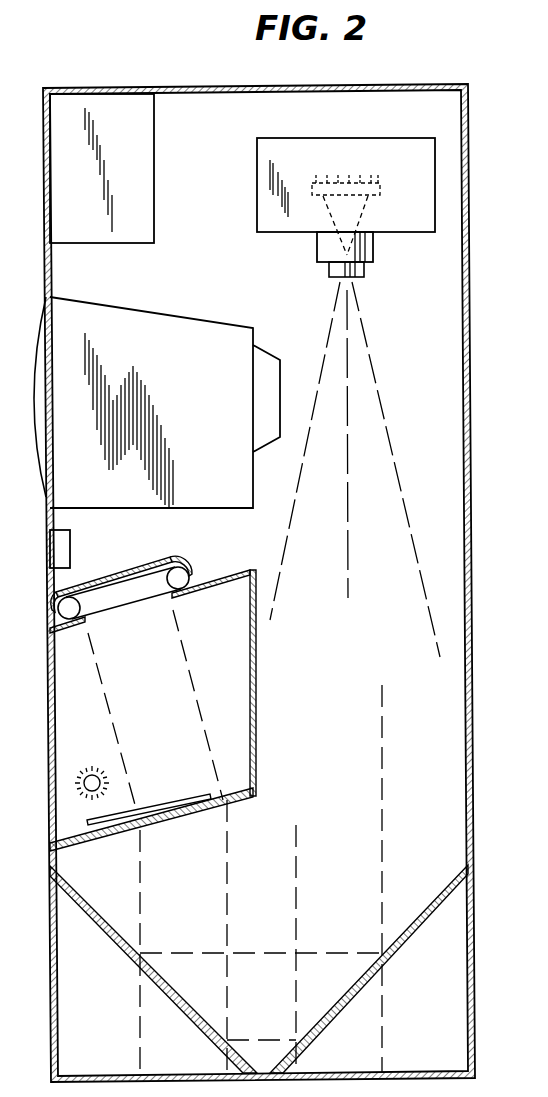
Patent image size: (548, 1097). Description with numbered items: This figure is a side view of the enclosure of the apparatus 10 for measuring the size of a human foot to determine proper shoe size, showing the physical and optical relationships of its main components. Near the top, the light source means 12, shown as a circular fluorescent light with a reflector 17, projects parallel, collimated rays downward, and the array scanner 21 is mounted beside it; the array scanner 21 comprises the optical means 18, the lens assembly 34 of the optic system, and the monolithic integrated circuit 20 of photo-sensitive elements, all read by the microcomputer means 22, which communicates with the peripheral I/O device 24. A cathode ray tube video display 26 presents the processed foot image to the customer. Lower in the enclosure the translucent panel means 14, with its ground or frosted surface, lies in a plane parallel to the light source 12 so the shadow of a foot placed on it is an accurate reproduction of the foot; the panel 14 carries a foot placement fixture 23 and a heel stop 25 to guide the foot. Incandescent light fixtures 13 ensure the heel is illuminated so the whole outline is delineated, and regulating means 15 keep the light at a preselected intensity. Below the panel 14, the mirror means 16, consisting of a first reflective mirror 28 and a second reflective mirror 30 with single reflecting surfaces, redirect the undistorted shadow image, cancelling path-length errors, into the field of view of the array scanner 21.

The apparatus for measuring the size of a human foot 10 is at (64, 82).
The light source means 12 is at (190, 579).
The incandescent light fixtures 13 is at (88, 775).
The translucent panel means 14 is at (242, 797).
The regulating means 15 is at (70, 553).
The mirror means 16 is at (259, 879).
The reflector 17 is at (122, 578).
The optical means 18 is at (373, 244).
The monolithic integrated circuit 20 is at (380, 188).
The array scanner 21 is at (272, 232).
The microcomputer means 22 is at (312, 138).
The foot placement fixture 23 is at (174, 802).
The peripheral I/O device 24 is at (157, 153).
The heel stop 25 is at (84, 822).
The cathode ray tube video display 26 is at (133, 304).
The first reflective mirror 28 is at (128, 955).
The second reflective mirror 30 is at (425, 908).
The lens assembly 34 is at (364, 268).